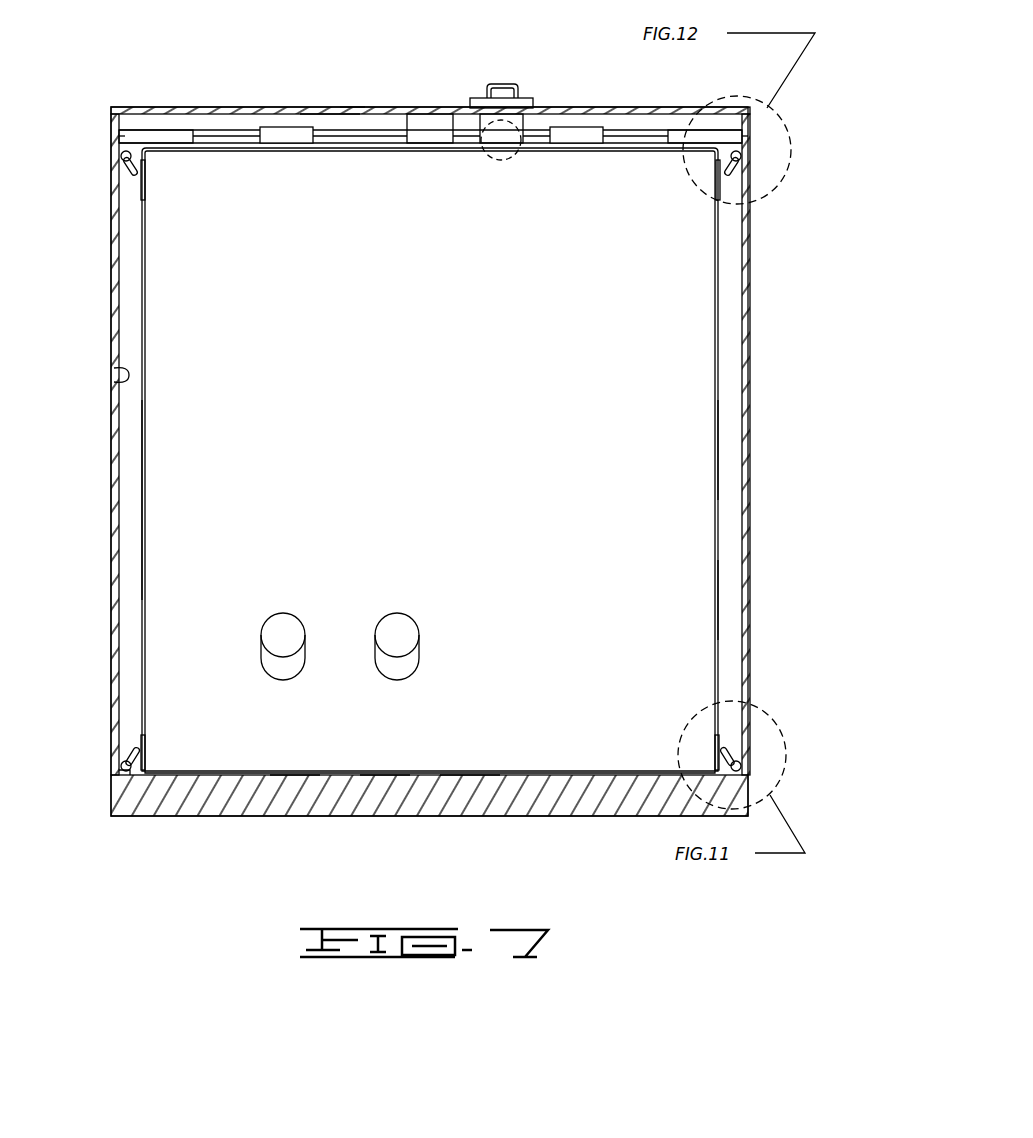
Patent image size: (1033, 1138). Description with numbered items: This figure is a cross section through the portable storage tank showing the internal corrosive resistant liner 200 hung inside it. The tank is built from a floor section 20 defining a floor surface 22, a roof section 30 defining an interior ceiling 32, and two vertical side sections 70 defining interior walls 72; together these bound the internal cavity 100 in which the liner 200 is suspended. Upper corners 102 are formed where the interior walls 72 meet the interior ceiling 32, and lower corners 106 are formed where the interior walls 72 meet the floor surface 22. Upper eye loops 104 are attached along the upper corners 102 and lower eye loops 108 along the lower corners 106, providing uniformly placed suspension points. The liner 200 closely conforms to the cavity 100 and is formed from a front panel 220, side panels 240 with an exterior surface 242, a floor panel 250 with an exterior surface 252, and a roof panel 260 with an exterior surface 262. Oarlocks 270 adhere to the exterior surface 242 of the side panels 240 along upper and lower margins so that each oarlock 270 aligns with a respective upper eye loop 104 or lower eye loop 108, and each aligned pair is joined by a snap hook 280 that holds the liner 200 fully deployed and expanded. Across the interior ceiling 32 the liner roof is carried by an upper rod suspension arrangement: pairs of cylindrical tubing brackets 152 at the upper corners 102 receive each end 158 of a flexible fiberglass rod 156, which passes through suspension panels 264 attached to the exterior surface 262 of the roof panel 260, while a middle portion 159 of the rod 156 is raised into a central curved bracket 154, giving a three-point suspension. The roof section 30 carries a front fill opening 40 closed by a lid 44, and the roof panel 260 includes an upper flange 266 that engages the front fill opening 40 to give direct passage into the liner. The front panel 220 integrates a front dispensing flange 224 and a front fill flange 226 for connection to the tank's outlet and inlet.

The floor section 20 is at (597, 815).
The floor surface 22 is at (470, 778).
The roof section 30 is at (333, 115).
The interior ceiling 32 is at (352, 112).
The front fill opening 40 is at (535, 95).
The lid 44 is at (497, 118).
The vertical side section 70 is at (110, 438).
The interior wall 72 is at (118, 375).
The internal cavity 100 is at (128, 606).
The upper corner 102 is at (125, 118).
The upper eye loop 104 is at (120, 155).
The lower corner 106 is at (125, 780).
The lower eye loop 108 is at (125, 762).
The cylindrical tubing bracket 152 is at (125, 135).
The central curved bracket 154 is at (418, 120).
The flexible fiberglass rod 156 is at (205, 133).
The rod end 158 is at (660, 130).
The middle portion of rod 159 is at (462, 133).
The internal corrosive resistant liner 200 is at (722, 347).
The front panel 220 is at (172, 533).
The front dispensing flange 224 is at (268, 655).
The front fill flange 226 is at (405, 660).
The side panel 240 is at (725, 450).
The exterior surface of side panel 242 is at (725, 597).
The floor panel 250 is at (292, 778).
The exterior surface of floor panel 252 is at (385, 778).
The roof panel 260 is at (222, 140).
The exterior surface of roof panel 262 is at (248, 147).
The suspension panel 264 is at (285, 137).
The upper flange 266 is at (503, 112).
The oarlock 270 is at (722, 192).
The snap hook 280 is at (745, 168).